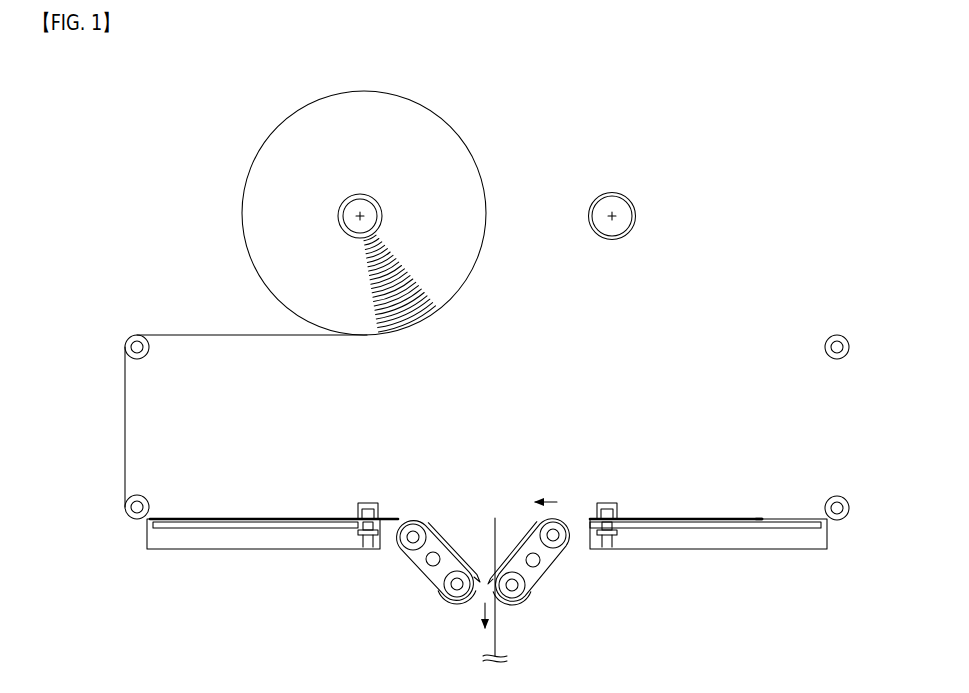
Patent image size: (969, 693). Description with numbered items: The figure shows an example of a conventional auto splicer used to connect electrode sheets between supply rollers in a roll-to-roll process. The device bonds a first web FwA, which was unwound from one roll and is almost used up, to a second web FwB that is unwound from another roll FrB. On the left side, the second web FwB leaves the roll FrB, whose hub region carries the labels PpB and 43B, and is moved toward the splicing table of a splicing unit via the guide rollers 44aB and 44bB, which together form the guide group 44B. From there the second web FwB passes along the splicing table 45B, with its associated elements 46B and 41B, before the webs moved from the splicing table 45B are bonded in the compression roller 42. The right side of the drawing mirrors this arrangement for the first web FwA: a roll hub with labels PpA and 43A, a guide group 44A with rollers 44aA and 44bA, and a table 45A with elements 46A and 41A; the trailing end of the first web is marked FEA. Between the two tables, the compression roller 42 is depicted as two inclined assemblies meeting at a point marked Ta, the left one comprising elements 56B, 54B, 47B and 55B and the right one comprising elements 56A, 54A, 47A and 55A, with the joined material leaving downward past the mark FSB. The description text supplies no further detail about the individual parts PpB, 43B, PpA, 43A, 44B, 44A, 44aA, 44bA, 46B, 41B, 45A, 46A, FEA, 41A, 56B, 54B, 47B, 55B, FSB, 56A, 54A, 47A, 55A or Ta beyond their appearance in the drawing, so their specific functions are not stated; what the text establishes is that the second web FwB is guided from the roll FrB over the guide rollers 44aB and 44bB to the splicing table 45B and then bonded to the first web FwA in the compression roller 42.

The film roll B PpB is at (347, 200).
The roll shaft B 43B is at (348, 215).
The roll FrB is at (275, 246).
The film roll A PpA is at (603, 193).
The roll shaft A 43A is at (621, 202).
The guide unit B 44B is at (152, 353).
The guide roller 44aB is at (137, 335).
The guide roller 44bB is at (140, 495).
The guide unit A 44A is at (822, 351).
The first guide roller A 44aA is at (838, 335).
The second guide roller A 44bA is at (837, 496).
The splicing table 45B is at (180, 549).
The suction plate B 46B is at (290, 528).
The second web FwB is at (275, 516).
The clamp B 41B is at (359, 497).
The support table A 45A is at (705, 549).
The suction plate A 46A is at (668, 528).
The first web FwA is at (625, 515).
The film end A FEA is at (762, 516).
The clamp A 41A is at (599, 497).
The upper roller B 56B is at (398, 545).
The belt B 54B is at (432, 577).
The idler B 47B is at (430, 580).
The lower roller B 55B is at (450, 603).
The film splice B FSB is at (470, 604).
The upper roller A 56A is at (572, 545).
The belt A 54A is at (540, 592).
The idler A 47A is at (535, 578).
The lower roller A 55A is at (518, 604).
The compression roller 42 is at (489, 512).
The joining point Ta is at (477, 580).